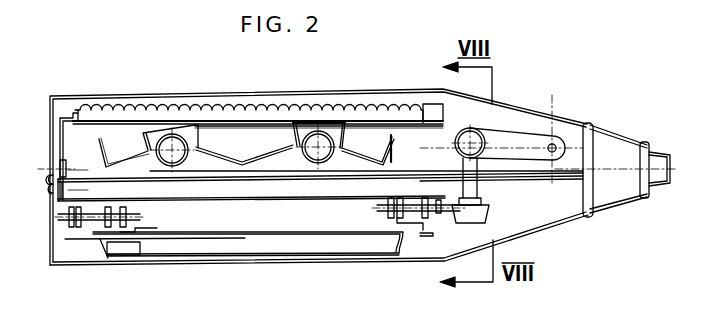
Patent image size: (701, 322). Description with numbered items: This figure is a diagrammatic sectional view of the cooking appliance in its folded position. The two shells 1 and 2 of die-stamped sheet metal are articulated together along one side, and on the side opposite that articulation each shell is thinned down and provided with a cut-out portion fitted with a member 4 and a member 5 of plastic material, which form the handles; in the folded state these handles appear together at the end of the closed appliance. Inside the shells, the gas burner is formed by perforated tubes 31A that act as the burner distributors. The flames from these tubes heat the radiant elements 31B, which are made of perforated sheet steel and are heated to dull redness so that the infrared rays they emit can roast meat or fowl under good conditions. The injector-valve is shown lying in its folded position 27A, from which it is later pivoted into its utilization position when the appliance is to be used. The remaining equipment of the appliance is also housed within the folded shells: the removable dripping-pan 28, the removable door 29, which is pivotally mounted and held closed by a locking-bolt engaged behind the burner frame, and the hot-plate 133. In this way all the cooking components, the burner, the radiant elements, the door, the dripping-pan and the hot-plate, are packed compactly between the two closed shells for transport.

The shell 1 is at (101, 94).
The shell 2 is at (362, 264).
The handle member 4 is at (610, 135).
The handle member 5 is at (613, 205).
The folded position of injector-valve 27A is at (512, 136).
The dripping-pan 28 is at (235, 255).
The door 29 is at (265, 232).
The perforated tube 31A is at (180, 163).
The radiant element 31B is at (280, 148).
The hot-plate 133 is at (333, 106).